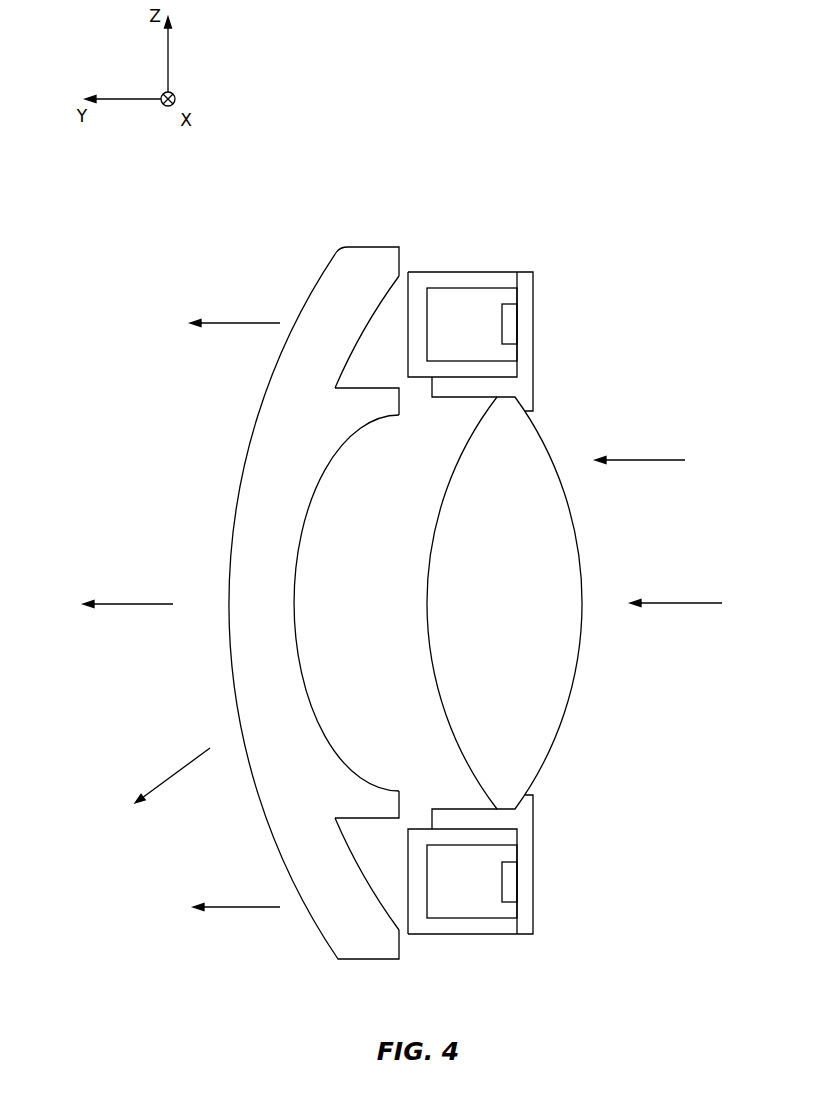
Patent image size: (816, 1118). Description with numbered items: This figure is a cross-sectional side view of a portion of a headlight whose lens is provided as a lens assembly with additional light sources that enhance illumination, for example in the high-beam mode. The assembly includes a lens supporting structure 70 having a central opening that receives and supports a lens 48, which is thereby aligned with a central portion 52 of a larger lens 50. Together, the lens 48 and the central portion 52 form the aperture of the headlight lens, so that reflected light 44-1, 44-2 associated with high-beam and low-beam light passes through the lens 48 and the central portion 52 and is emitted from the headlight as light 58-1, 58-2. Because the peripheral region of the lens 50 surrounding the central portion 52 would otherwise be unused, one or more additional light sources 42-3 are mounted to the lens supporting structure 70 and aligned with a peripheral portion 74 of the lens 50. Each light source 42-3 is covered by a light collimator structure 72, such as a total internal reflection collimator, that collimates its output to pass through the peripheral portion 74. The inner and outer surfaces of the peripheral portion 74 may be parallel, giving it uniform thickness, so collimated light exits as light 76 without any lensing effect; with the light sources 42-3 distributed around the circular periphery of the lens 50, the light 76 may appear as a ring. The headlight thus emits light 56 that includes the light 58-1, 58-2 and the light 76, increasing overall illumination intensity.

The light source 42-3 is at (511, 323).
The light 44-1 is at (650, 460).
The light 44-2 is at (685, 603).
The lens 48 is at (494, 618).
The lens 50 is at (362, 255).
The central portion 52 is at (317, 602).
The light 56 is at (146, 239).
The light 58-1 is at (175, 772).
The light 58-2 is at (138, 604).
The lens supporting structure 70 is at (528, 385).
The light collimator structure 72 is at (492, 277).
The peripheral portion 74 is at (381, 336).
The light 76 is at (244, 323).